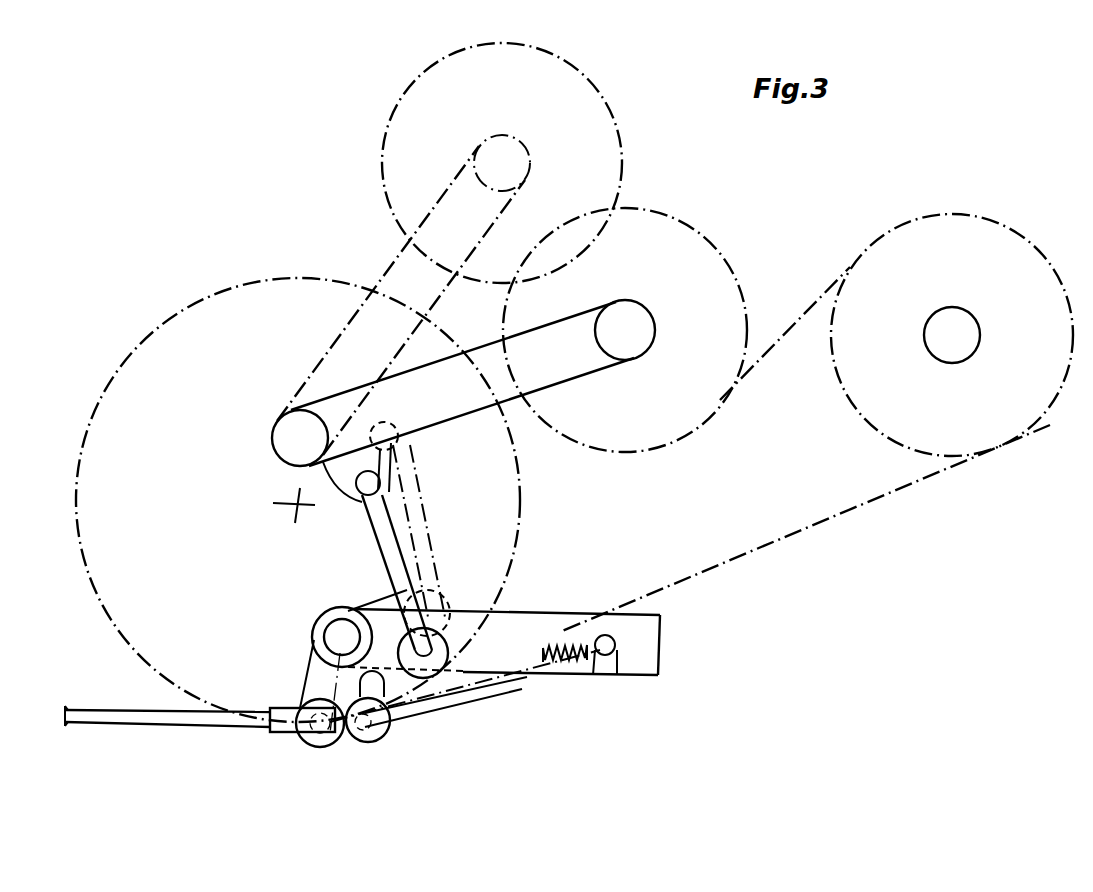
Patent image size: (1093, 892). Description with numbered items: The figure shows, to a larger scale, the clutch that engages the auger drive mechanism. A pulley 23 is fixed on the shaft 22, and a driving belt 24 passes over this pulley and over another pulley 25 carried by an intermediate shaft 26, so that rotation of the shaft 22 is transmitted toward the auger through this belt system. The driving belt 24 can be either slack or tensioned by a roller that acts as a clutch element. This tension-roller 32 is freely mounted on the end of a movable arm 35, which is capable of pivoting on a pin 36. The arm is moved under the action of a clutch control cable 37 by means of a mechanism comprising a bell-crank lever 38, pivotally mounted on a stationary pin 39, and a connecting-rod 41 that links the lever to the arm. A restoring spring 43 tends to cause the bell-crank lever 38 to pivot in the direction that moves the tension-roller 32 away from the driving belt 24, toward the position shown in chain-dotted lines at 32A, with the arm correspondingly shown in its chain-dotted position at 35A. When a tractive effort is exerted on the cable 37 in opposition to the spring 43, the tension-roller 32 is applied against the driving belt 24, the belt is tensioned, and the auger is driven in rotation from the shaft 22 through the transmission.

The shaft 22 is at (952, 312).
The pulley 23 is at (862, 413).
The driving belt 24 is at (798, 532).
The pulley 25 is at (518, 547).
The intermediate shaft 26 is at (290, 510).
The tension-roller 32 is at (720, 253).
The tension-roller in disengaged position 32A is at (623, 145).
The movable arm 35 is at (483, 347).
The movable arm in disengaged position 35A is at (387, 270).
The pin 36 is at (298, 438).
The clutch control cable 37 is at (103, 713).
The bell-crank lever 38 is at (367, 607).
The stationary pin 39 is at (340, 638).
The connecting-rod 41 is at (388, 547).
The restoring spring 43 is at (542, 665).